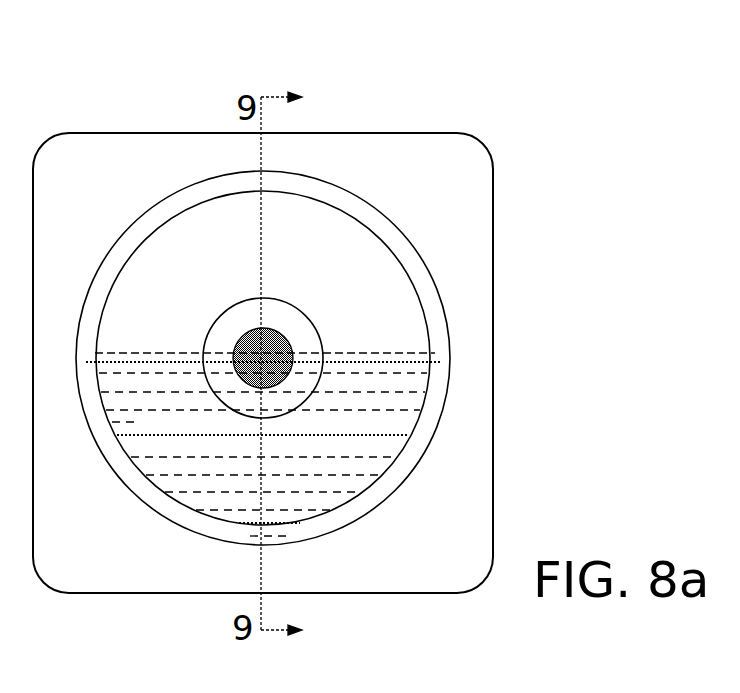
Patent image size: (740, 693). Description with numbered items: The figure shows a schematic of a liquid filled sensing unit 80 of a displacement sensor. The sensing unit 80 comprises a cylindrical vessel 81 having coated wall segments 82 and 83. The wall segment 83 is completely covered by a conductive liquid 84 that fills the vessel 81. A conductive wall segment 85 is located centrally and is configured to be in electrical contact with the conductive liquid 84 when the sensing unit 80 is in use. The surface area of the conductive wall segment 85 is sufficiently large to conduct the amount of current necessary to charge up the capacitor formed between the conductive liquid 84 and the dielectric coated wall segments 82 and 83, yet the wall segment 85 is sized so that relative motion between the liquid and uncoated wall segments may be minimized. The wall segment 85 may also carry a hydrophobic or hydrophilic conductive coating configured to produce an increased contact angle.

The sensing unit 80 is at (566, 64).
The cylindrical vessel 81 is at (430, 290).
The coated wall segment 82 is at (332, 248).
The coated wall segment 83 is at (113, 418).
The conductive liquid 84 is at (427, 422).
The conductive wall segment 85 is at (250, 340).